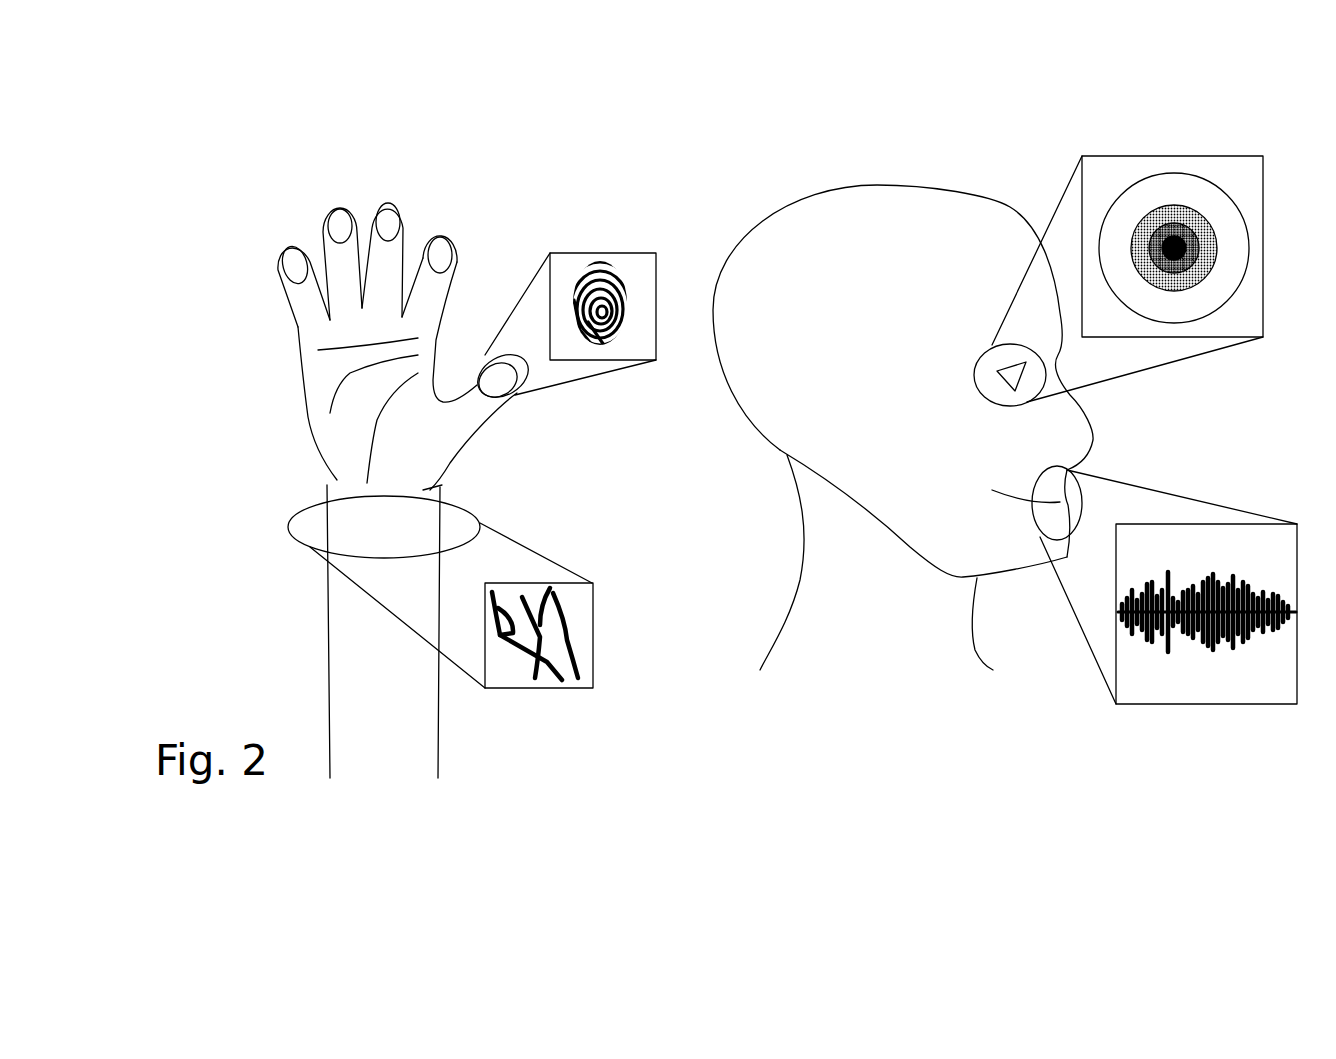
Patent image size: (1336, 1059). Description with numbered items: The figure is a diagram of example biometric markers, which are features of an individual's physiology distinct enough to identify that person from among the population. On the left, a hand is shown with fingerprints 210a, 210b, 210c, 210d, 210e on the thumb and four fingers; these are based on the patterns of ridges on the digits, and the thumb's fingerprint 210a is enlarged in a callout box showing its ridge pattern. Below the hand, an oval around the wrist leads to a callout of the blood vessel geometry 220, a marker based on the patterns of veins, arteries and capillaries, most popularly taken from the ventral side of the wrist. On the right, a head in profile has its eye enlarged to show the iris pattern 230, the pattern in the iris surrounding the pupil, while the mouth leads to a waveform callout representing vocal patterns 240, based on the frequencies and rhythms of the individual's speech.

The fingerprint 210a is at (597, 255).
The fingerprint 210b is at (440, 228).
The fingerprint 210c is at (386, 193).
The fingerprint 210d is at (337, 196).
The fingerprint 210e is at (285, 237).
The blood vessel geometry 220 is at (595, 637).
The iris pattern 230 is at (1167, 156).
The vocal patterns 240 is at (1207, 704).